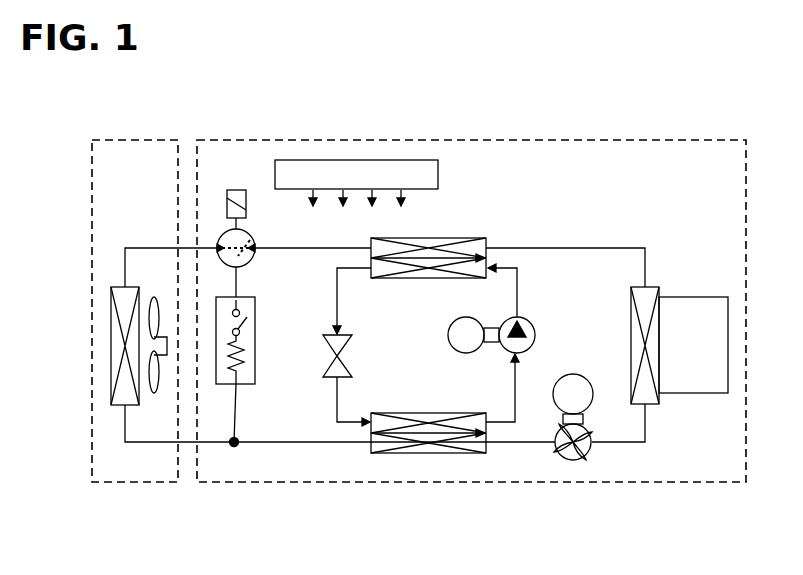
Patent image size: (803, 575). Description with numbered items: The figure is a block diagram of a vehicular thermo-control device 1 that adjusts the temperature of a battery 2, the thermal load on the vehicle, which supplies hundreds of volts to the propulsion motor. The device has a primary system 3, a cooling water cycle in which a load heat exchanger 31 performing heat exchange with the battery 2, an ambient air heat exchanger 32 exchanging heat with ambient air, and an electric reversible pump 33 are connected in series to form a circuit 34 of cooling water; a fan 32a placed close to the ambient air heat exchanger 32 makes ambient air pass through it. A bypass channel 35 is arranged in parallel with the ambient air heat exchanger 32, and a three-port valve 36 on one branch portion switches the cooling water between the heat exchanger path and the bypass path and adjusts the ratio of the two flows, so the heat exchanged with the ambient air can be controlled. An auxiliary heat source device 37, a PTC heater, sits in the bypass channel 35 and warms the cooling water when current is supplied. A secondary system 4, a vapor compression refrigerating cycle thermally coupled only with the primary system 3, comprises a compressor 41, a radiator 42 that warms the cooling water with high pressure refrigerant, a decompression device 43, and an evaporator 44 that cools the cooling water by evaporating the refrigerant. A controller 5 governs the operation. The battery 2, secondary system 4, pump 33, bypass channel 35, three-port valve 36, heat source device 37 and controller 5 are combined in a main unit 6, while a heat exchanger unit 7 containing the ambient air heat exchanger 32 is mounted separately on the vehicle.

The vehicular thermo-control device 1 is at (420, 125).
The battery 2 is at (678, 296).
The primary system 3 is at (504, 233).
The secondary system 4 is at (528, 293).
The controller 5 is at (326, 160).
The main unit 6 is at (222, 140).
The heat exchanger unit 7 is at (142, 140).
The load heat exchanger 31 is at (653, 404).
The ambient air heat exchanger 32 is at (122, 405).
The fan 32a is at (157, 395).
The pump 33 is at (573, 460).
The circuit 34 is at (620, 443).
The bypass channel 35 is at (248, 385).
The three-port valve 36 is at (253, 258).
The auxiliary heat source device 37 is at (235, 390).
The compressor 41 is at (528, 353).
The radiator 42 is at (385, 280).
The decompression device 43 is at (333, 380).
The evaporator 44 is at (430, 453).